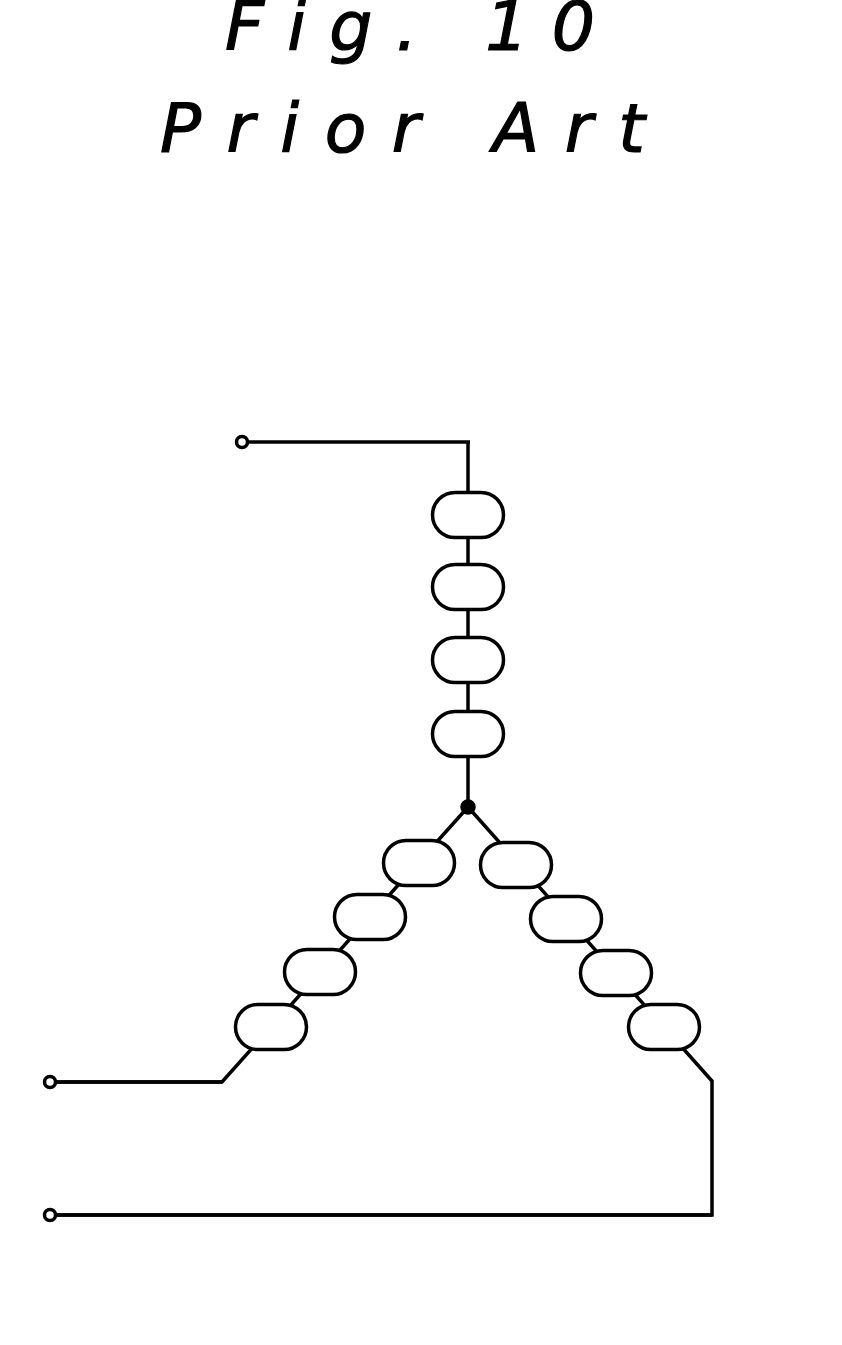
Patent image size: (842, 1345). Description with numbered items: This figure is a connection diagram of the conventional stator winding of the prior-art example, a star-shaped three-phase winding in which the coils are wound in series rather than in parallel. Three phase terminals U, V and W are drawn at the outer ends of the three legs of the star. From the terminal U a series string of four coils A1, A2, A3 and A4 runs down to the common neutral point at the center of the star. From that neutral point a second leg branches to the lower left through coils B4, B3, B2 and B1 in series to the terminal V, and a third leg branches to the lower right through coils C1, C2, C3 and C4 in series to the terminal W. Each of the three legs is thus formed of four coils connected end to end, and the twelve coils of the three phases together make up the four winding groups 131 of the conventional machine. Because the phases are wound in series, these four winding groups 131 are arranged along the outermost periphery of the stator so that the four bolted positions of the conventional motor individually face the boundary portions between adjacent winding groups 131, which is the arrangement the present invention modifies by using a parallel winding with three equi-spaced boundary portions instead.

The winding groups 131 is at (576, 595).
The U-phase terminal U is at (341, 418).
The V-phase terminal V is at (122, 1058).
The W-phase terminal W is at (366, 1191).
The phase A coil 1 A1 is at (468, 515).
The phase A coil 2 A2 is at (468, 587).
The phase A coil 3 A3 is at (468, 660).
The phase A coil 4 A4 is at (468, 734).
The phase B coil 1 B1 is at (271, 1027).
The phase B coil 2 B2 is at (320, 972).
The phase B coil 3 B3 is at (370, 917).
The phase B coil 4 B4 is at (419, 863).
The phase C coil 1 C1 is at (516, 865).
The phase C coil 2 C2 is at (566, 919).
The phase C coil 3 C3 is at (616, 973).
The phase C coil 4 C4 is at (664, 1027).